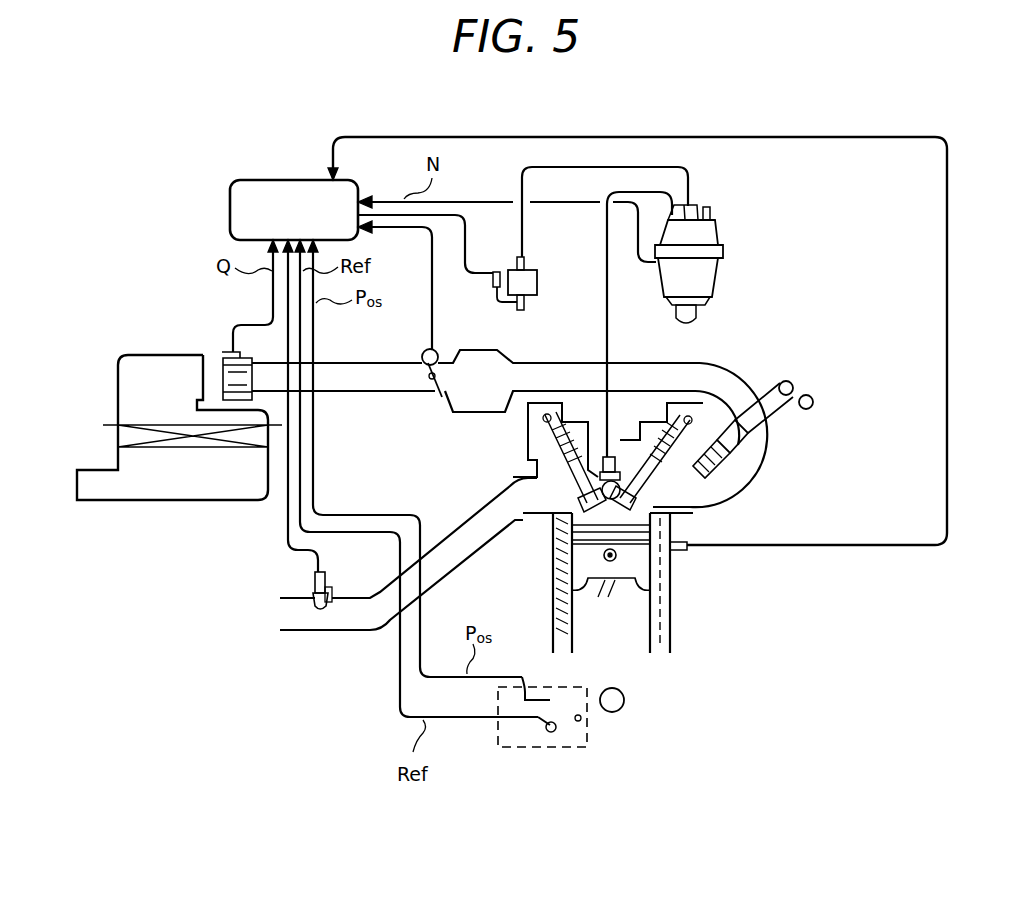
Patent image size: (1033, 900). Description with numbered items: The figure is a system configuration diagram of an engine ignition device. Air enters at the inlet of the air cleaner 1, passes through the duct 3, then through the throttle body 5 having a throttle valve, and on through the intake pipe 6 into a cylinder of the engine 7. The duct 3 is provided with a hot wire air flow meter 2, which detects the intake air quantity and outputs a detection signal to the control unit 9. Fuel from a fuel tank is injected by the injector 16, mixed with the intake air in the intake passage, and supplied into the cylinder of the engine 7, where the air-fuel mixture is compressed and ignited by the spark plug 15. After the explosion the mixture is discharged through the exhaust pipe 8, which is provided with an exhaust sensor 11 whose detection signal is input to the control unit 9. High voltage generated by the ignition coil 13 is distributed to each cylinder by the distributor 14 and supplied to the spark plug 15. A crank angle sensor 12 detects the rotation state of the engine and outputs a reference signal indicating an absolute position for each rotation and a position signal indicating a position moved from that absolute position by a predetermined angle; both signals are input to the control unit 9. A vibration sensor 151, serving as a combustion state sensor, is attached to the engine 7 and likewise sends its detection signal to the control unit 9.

The air cleaner 1 is at (148, 500).
The hot wire air flow meter 2 is at (223, 350).
The duct 3 is at (366, 362).
The throttle body 5 is at (442, 397).
The intake pipe 6 is at (728, 503).
The engine 7 is at (586, 583).
The exhaust pipe 8 is at (448, 528).
The control unit 9 is at (290, 179).
The exhaust sensor 11 is at (315, 578).
The crank angle sensor 12 is at (527, 750).
The ignition coil 13 is at (537, 277).
The distributor 14 is at (723, 253).
The spark plug 15 is at (614, 457).
The injector 16 is at (727, 455).
The vibration sensor 151 is at (693, 552).